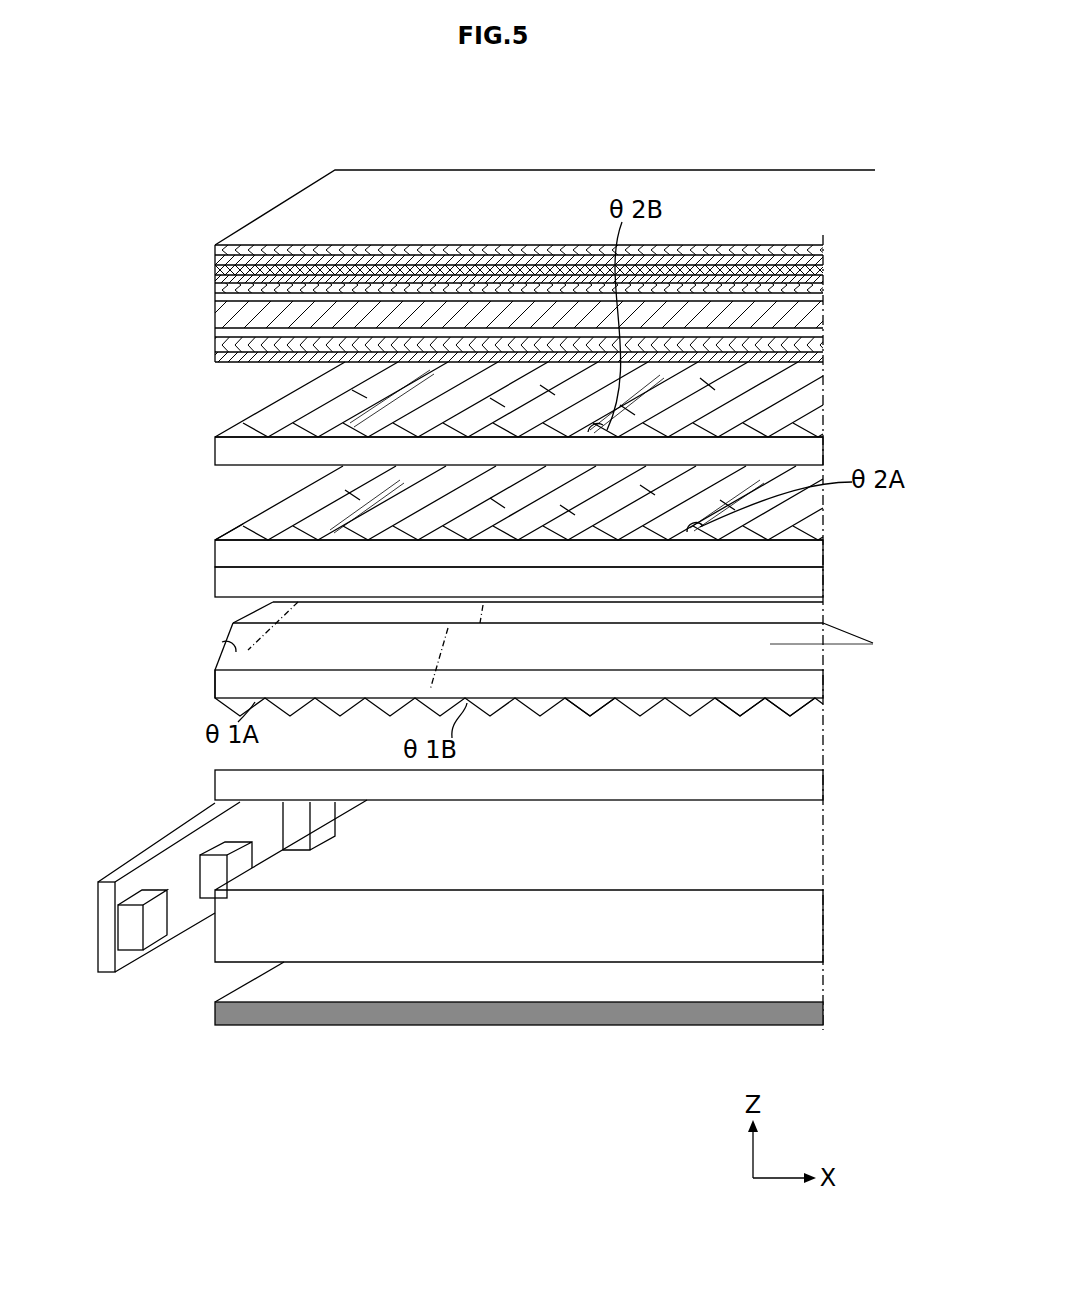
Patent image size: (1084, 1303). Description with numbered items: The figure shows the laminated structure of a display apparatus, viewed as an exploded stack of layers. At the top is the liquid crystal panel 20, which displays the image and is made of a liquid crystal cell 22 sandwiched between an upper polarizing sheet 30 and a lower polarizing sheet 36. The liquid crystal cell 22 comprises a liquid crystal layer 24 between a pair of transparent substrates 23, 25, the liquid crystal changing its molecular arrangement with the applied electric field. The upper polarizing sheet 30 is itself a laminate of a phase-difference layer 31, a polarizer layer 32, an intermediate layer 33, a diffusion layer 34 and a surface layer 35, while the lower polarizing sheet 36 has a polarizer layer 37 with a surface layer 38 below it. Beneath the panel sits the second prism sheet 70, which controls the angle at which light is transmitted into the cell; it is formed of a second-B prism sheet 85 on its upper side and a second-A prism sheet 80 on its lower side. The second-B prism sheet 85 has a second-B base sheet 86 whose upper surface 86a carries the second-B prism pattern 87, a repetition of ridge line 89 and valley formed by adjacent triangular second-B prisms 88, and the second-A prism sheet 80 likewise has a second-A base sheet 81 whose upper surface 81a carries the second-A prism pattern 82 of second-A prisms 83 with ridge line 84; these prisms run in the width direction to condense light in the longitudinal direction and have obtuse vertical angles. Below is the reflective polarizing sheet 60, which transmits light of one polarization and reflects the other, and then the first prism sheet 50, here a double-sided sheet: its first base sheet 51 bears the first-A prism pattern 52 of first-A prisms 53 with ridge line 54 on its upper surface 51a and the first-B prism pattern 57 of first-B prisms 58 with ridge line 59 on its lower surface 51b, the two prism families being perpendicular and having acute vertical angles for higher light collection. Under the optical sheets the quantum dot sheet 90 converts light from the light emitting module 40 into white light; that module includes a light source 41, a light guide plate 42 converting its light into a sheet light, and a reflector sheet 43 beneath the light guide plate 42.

The liquid crystal panel 20 is at (560, 200).
The liquid crystal cell 22 is at (451, 295).
The transparent substrate 23 is at (214, 298).
The liquid crystal layer 24 is at (214, 314).
The transparent substrate 25 is at (479, 320).
The upper polarizing sheet 30 is at (519, 180).
The phase-difference layer 31 is at (450, 106).
The polarizer layer 32 is at (335, 277).
The intermediate layer 33 is at (365, 270).
The diffusion layer 34 is at (397, 260).
The surface layer 35 is at (437, 250).
The lower polarizing sheet 36 is at (451, 321).
The polarizer layer 37 is at (214, 340).
The surface layer 38 is at (214, 356).
The light emitting module 40 is at (460, 959).
The light source 41 is at (130, 978).
The light guide plate 42 is at (218, 952).
The reflector sheet 43 is at (519, 1035).
The first prism sheet 50 is at (524, 678).
The first base sheet 51 is at (214, 698).
The upper surface 51a is at (232, 668).
The lower surface 51b is at (577, 705).
The first-A prism pattern 52 is at (748, 648).
The first-A prism 53 is at (675, 647).
The ridge line 54 is at (753, 623).
The first-B prism pattern 57 is at (803, 712).
The first-B prism 58 is at (750, 700).
The ridge line 59 is at (735, 705).
The reflective polarizing sheet 60 is at (214, 587).
The second prism sheet 70 is at (485, 426).
The second-A prism sheet 80 is at (512, 522).
The second-A base sheet 81 is at (214, 557).
The upper surface 81a is at (242, 535).
The second-A prism pattern 82 is at (793, 537).
The second-A prism 83 is at (764, 522).
The ridge line 84 is at (785, 513).
The second-B prism sheet 85 is at (513, 370).
The second-B base sheet 86 is at (800, 452).
The upper surface 86a is at (800, 432).
The second-B prism pattern 87 is at (790, 382).
The second-B prism 88 is at (757, 393).
The ridge line 89 is at (760, 375).
The quantum dot sheet 90 is at (214, 775).